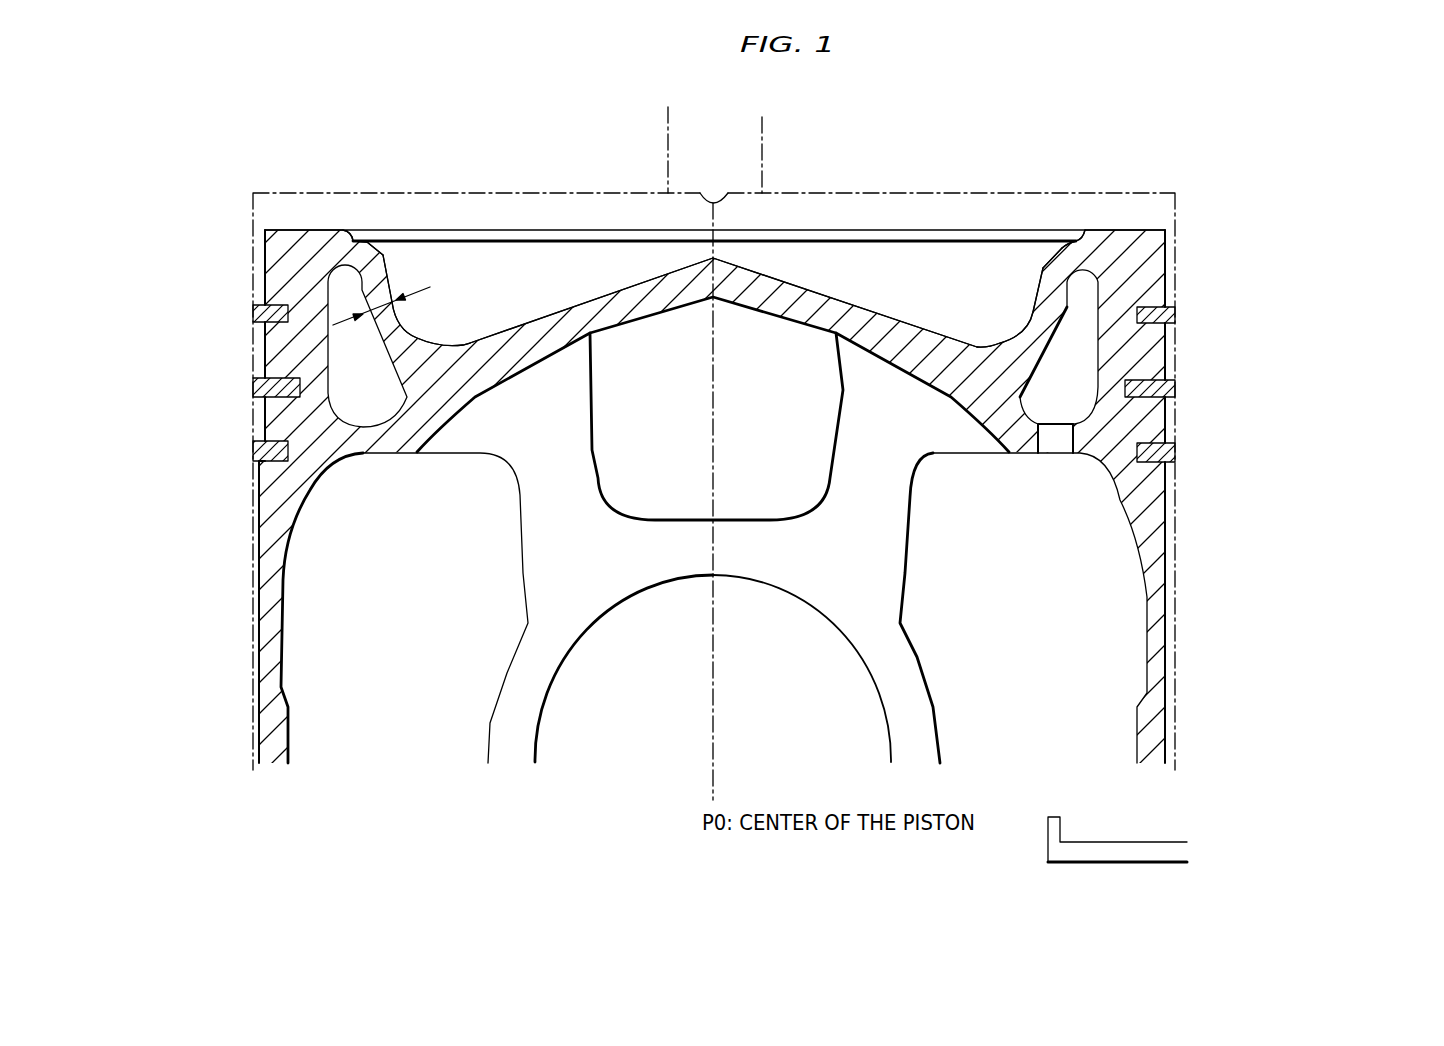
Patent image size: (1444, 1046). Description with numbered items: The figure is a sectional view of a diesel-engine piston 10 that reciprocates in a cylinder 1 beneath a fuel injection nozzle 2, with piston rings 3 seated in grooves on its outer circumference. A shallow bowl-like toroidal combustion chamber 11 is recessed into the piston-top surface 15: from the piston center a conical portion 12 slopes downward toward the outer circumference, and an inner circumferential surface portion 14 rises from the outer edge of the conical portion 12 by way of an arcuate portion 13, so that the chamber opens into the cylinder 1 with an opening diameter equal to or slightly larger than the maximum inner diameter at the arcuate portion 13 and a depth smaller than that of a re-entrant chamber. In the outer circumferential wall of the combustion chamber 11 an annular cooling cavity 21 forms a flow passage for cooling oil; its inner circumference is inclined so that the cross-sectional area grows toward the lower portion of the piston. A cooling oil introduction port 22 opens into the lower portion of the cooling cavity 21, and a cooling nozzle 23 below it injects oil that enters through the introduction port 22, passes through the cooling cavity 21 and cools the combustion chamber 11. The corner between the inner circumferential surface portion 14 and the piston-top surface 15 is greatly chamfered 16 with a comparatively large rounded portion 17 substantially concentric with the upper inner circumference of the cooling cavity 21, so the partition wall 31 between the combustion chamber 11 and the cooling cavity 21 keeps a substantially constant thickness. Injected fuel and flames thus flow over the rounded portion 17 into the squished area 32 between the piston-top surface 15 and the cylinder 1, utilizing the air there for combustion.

The cylinder 1 is at (273, 192).
The fuel injection nozzle 2 is at (762, 117).
The piston rings 3 is at (1177, 320).
The piston 10 is at (263, 270).
The combustion chamber 11 is at (538, 262).
The conical portion 12 is at (582, 307).
The arcuate portion 13 is at (432, 342).
The inner circumferential surface portion 14 is at (392, 273).
The piston-top surface 15 is at (267, 230).
The chamfered portion 16 is at (406, 212).
The rounded portion 17 is at (386, 245).
The cooling cavity 21 is at (378, 432).
The cooling oil introduction port 22 is at (1050, 447).
The cooling nozzle 23 is at (1098, 843).
The partition wall 31 is at (367, 345).
The squished area 32 is at (336, 200).